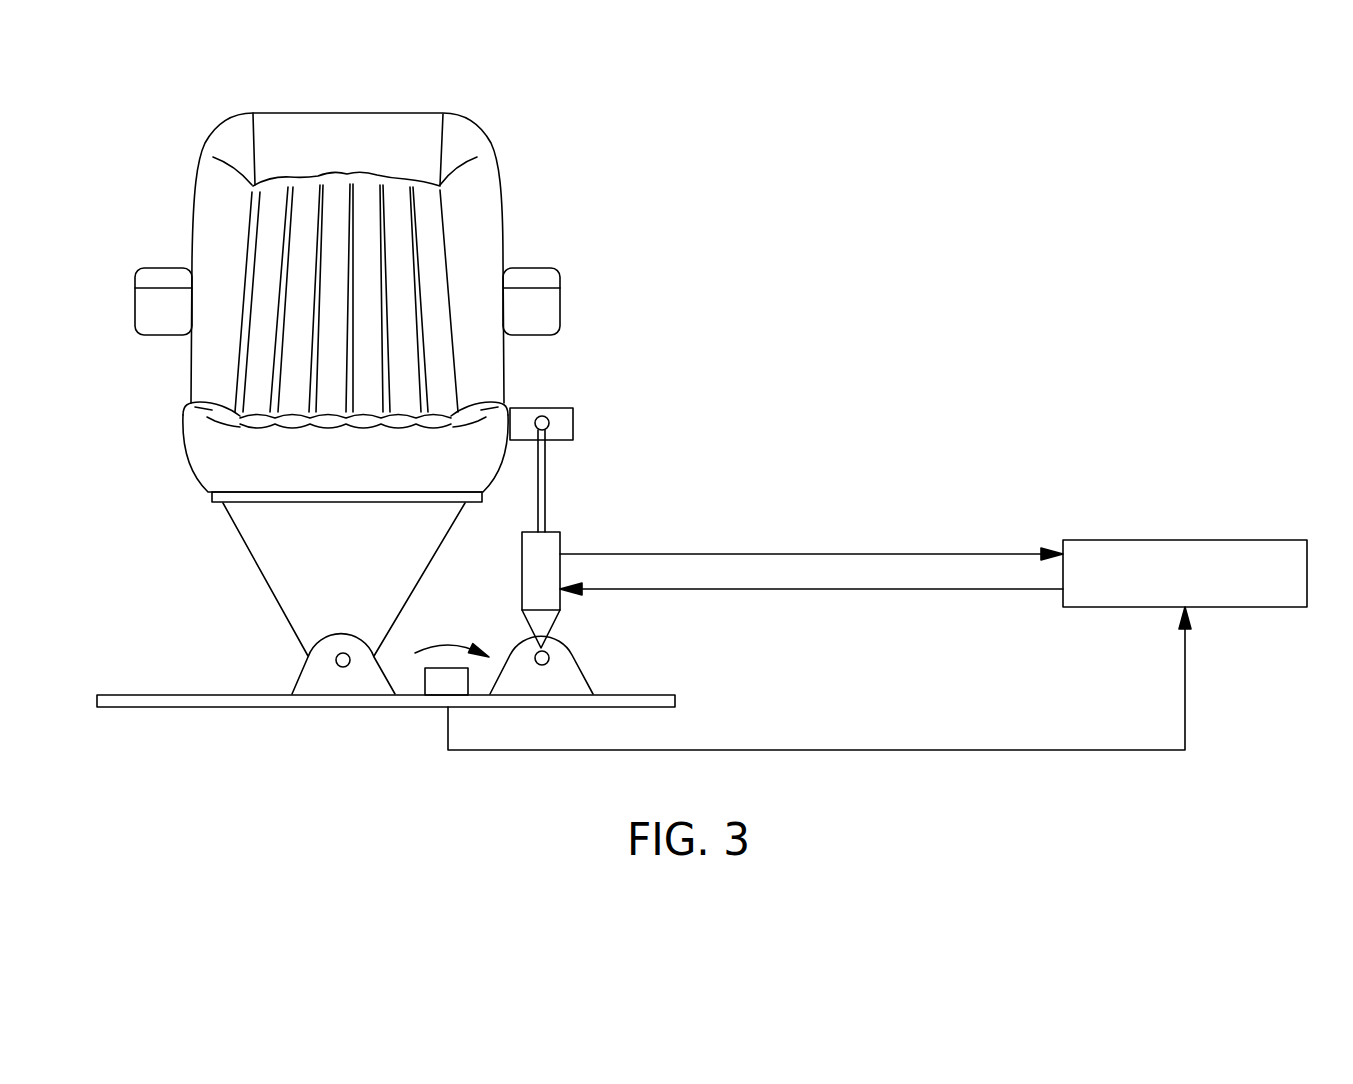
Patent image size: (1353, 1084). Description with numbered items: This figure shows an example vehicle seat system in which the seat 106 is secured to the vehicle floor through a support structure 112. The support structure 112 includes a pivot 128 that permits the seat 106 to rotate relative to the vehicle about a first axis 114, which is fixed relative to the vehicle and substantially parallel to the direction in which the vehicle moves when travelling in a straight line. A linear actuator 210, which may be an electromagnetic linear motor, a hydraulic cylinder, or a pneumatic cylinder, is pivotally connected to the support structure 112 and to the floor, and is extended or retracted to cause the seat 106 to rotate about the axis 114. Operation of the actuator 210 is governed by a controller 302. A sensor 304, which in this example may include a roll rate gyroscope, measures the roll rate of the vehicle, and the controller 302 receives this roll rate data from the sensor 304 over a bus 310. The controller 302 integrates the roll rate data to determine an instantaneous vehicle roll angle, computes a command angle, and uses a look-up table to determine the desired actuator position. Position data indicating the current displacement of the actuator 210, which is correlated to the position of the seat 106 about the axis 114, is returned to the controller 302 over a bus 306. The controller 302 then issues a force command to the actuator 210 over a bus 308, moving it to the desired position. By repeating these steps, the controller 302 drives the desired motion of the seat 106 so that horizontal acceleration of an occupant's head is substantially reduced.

The seat 106 is at (192, 360).
The support structure 112 is at (265, 523).
The first axis 114 is at (338, 637).
The pivot 128 is at (328, 681).
The sensor 304 is at (423, 681).
The linear actuator 210 is at (557, 530).
The controller 302 is at (1155, 540).
The bus 306 is at (788, 554).
The bus 308 is at (788, 589).
The bus 310 is at (817, 750).